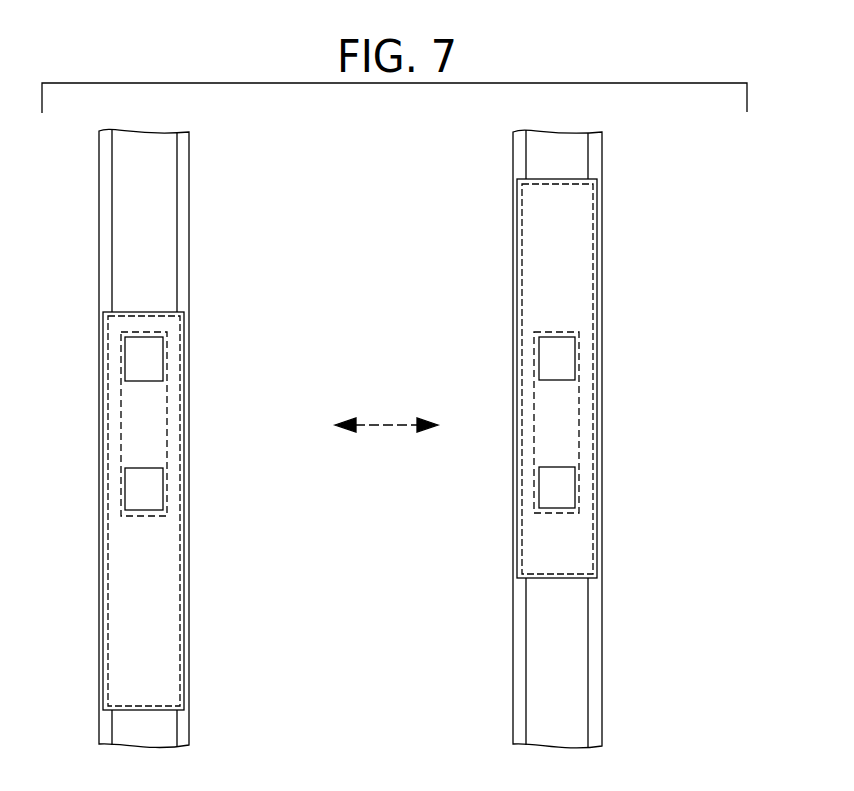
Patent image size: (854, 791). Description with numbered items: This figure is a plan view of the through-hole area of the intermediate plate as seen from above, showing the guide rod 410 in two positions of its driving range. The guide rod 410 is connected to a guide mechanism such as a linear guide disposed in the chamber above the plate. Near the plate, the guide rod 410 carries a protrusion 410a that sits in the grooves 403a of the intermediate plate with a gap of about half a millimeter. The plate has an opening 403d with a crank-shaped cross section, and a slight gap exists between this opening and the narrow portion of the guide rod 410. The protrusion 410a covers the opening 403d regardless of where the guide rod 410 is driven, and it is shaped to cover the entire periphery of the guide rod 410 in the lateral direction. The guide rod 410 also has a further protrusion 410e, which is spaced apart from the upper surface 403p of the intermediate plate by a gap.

The grooves 403a is at (189, 248).
The upper surface 403p is at (165, 732).
The opening 403d is at (165, 413).
The guide rod 410 is at (163, 488).
The protrusion 410a is at (165, 573).
The protrusion 410e is at (163, 318).